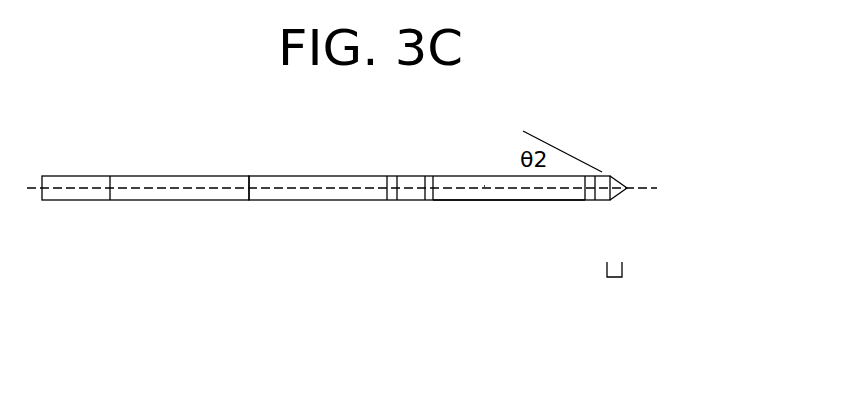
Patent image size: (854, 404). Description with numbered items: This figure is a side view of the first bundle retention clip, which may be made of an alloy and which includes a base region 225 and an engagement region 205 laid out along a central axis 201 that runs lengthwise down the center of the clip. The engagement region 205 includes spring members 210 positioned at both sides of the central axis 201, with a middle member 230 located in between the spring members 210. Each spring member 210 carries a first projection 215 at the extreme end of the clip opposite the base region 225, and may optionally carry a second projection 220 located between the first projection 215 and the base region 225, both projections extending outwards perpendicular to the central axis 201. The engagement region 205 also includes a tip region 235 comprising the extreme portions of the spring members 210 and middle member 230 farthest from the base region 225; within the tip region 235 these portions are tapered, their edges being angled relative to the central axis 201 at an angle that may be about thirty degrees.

The central axis 201 is at (363, 187).
The engagement region 205 is at (438, 139).
The spring member 210 is at (484, 186).
The first projection 215 is at (600, 202).
The second projection 220 is at (412, 202).
The base region 225 is at (145, 139).
The middle member 230 is at (517, 202).
The tip region 235 is at (616, 288).